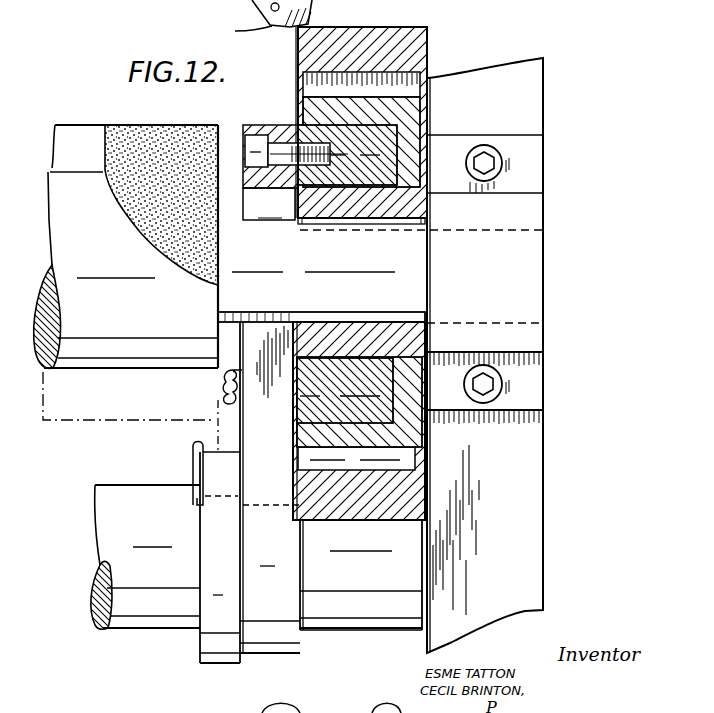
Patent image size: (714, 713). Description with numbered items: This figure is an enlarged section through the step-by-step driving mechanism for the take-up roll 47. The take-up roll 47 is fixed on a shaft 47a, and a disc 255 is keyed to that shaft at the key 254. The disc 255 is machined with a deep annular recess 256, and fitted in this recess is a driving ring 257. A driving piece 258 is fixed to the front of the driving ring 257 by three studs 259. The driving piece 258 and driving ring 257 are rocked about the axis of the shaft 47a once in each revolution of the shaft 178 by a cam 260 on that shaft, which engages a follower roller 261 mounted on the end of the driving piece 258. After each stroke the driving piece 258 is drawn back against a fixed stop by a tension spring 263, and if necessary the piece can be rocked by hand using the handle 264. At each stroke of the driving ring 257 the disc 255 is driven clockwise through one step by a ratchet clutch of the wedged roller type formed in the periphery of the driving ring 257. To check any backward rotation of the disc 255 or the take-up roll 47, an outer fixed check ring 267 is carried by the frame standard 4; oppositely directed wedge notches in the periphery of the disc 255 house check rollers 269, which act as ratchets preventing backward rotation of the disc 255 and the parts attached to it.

The frame standard 4 is at (543, 113).
The take-up roll 47 is at (167, 138).
The shaft 47a is at (240, 323).
The shaft 178 is at (172, 617).
The key 254 is at (400, 222).
The disc 255 is at (372, 105).
The deep annular recess 256 is at (297, 123).
The driving ring 257 is at (352, 132).
The driving piece 258 is at (278, 178).
The studs 259 is at (241, 134).
The cam 260 is at (218, 472).
The follower roller 261 is at (193, 450).
The tension spring 263 is at (223, 402).
The handle 264 is at (449, 15).
The outer fixed check ring 267 is at (368, 30).
The check rollers 269 is at (412, 97).